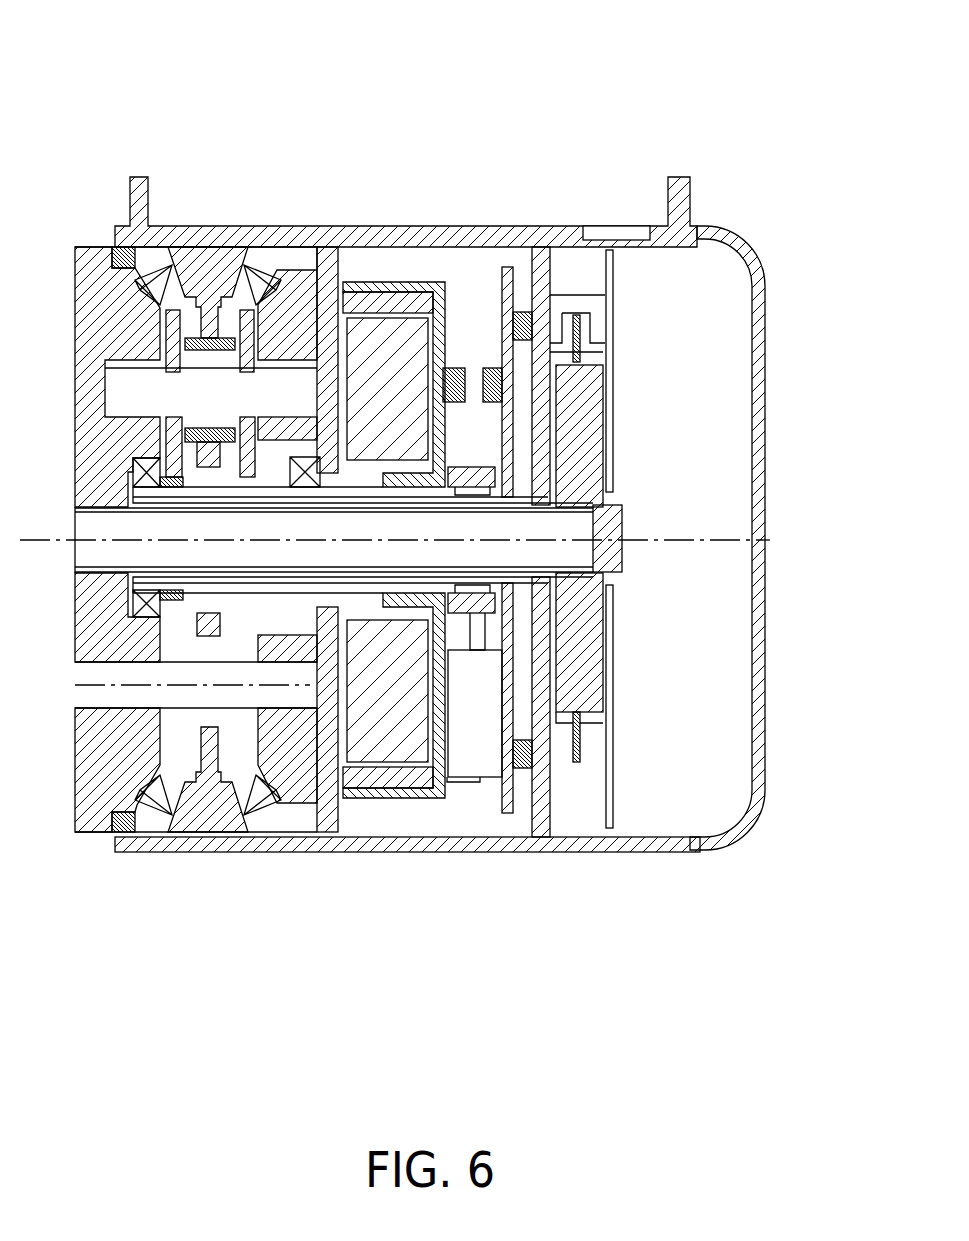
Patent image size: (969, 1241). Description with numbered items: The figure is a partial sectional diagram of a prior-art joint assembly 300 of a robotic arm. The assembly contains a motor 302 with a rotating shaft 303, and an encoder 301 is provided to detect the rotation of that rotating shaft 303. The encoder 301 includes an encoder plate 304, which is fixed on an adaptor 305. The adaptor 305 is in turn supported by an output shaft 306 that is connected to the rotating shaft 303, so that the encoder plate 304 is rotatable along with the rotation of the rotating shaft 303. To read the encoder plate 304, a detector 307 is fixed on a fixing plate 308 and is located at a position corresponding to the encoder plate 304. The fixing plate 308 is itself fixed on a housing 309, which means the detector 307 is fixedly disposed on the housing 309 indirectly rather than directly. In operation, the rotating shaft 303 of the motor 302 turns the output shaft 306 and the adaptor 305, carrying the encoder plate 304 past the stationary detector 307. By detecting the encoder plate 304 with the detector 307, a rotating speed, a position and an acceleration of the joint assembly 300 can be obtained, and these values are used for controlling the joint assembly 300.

The joint assembly 300 is at (130, 85).
The encoder 301 is at (598, 780).
The motor 302 is at (410, 258).
The rotating shaft 303 is at (236, 463).
The encoder plate 304 is at (598, 359).
The adaptor 305 is at (627, 422).
The output shaft 306 is at (100, 586).
The detector 307 is at (592, 277).
The fixing plate 308 is at (565, 802).
The housing 309 is at (788, 434).